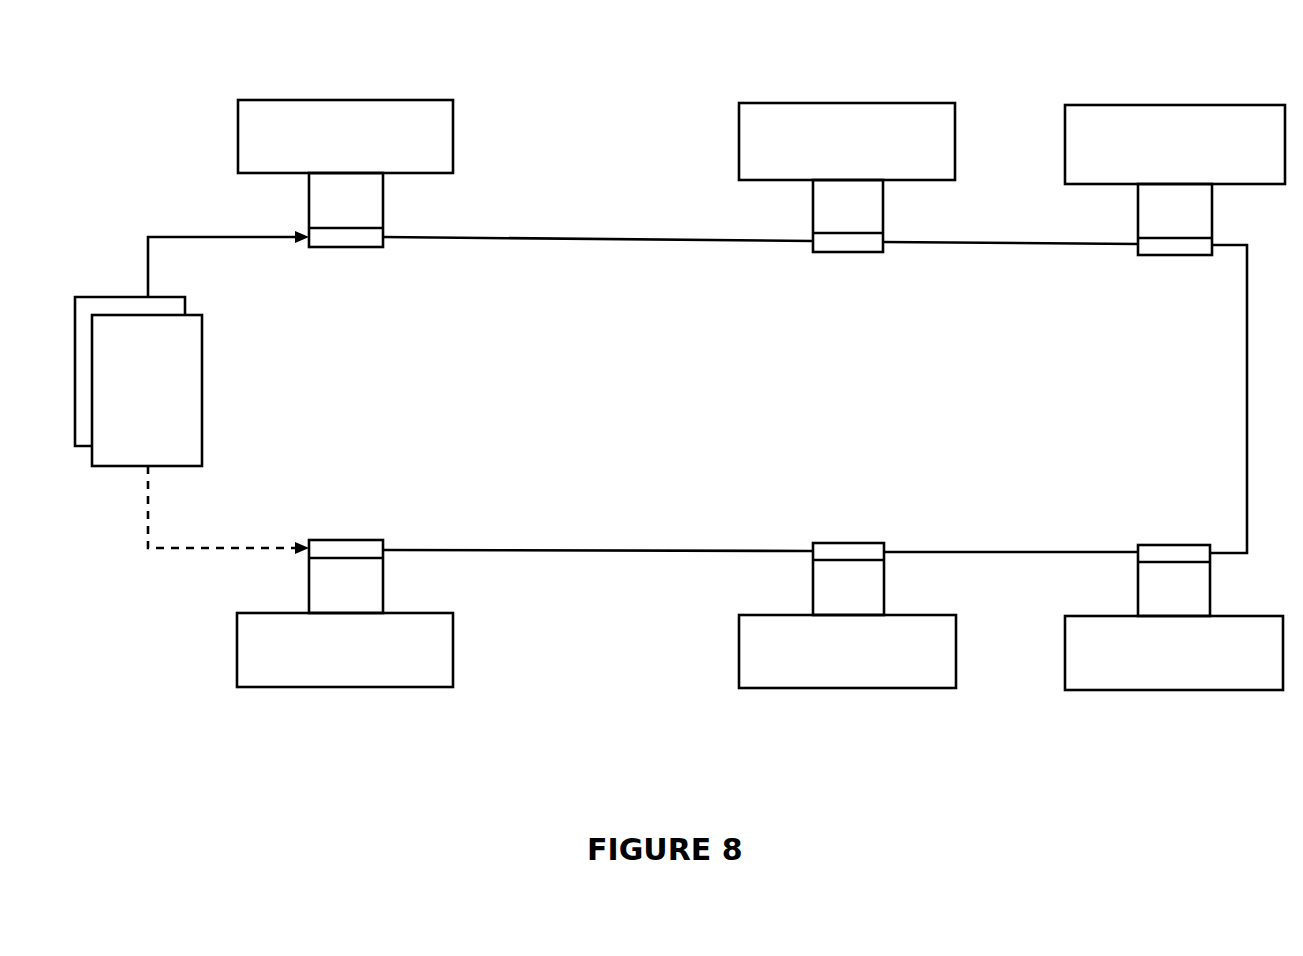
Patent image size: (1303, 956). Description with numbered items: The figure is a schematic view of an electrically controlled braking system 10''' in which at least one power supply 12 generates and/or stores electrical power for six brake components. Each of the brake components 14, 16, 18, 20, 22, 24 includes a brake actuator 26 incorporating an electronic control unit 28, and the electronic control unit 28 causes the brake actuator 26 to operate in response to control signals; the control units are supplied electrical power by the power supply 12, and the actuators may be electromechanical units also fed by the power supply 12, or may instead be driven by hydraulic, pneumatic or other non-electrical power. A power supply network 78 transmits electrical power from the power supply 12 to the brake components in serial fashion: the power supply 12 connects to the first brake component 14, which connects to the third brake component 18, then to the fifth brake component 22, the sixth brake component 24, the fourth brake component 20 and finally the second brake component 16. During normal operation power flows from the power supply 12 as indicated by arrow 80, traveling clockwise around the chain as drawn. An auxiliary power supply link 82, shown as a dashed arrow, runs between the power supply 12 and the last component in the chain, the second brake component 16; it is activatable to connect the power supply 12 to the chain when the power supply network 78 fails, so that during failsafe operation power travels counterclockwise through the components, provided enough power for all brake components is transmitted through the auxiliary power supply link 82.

The electrically controlled braking system 10''' is at (680, 449).
The power supply 12 is at (187, 370).
The first brake component 14 is at (390, 110).
The second brake component 16 is at (409, 668).
The third brake component 18 is at (767, 113).
The fourth brake component 20 is at (795, 675).
The fifth brake component 22 is at (1100, 115).
The sixth brake component 24 is at (1093, 675).
The brake actuator 26 is at (365, 200).
The electronic control unit 28 is at (832, 242).
The power supply network 78 is at (815, 395).
The arrow 80 is at (190, 233).
The auxiliary power supply link 82 is at (168, 550).